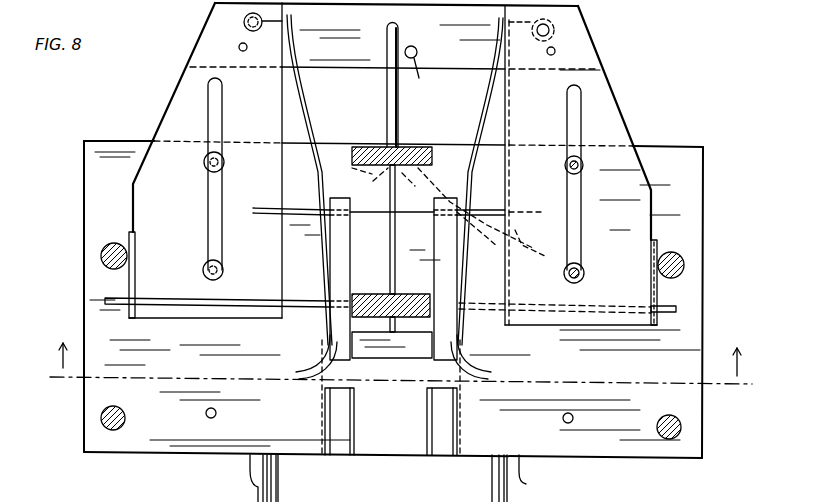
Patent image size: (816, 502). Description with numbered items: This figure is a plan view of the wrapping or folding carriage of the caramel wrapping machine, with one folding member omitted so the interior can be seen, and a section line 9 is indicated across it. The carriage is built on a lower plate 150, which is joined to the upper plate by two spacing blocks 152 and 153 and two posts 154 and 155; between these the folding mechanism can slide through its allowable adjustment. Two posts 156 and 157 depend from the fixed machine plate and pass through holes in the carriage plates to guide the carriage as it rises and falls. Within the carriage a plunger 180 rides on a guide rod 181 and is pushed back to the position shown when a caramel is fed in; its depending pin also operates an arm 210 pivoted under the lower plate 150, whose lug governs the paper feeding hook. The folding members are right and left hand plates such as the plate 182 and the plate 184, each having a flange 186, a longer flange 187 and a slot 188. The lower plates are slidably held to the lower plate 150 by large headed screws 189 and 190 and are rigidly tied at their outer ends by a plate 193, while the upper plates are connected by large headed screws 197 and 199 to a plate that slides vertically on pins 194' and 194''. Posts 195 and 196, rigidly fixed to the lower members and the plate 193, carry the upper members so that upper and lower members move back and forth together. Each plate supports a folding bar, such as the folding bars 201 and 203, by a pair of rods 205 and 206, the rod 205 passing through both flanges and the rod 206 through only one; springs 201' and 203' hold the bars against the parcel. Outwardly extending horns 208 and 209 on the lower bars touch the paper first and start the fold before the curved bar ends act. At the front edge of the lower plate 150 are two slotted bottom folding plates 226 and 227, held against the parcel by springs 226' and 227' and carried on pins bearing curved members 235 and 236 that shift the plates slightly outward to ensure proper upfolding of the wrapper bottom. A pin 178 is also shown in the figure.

The section line 9- 9 is at (397, 370).
The lower plate 150 is at (703, 411).
The spacing block 152 is at (416, 146).
The spacing block 153 is at (409, 294).
The post 154 is at (100, 418).
The post 155 is at (682, 428).
The post 156 is at (101, 257).
The post 157 is at (684, 262).
The pin 178 is at (424, 71).
The plunger 180 is at (407, 358).
The guide rod 181 is at (386, 113).
The plate 182 is at (261, 203).
The plate 184 is at (620, 255).
The flange 186 is at (136, 290).
The longer flange 187 is at (258, 256).
The slot 188 is at (222, 202).
The large headed screw 189 is at (224, 162).
The large headed screw 190 is at (224, 272).
The plate 193 is at (512, 23).
The pin 194' is at (186, 417).
The pin 194'' is at (594, 412).
The post 195 is at (555, 50).
The post 196 is at (260, 37).
The large headed screw 197 is at (566, 277).
The large headed screw 199 is at (583, 165).
The folding bar 201 is at (358, 279).
The spring 201' is at (326, 180).
The folding bar 203 is at (431, 279).
The spring 203' is at (471, 181).
The rod 205 is at (118, 306).
The rod 206 is at (267, 215).
The horn 208 is at (304, 368).
The horn 209 is at (486, 371).
The arm 210 is at (545, 266).
The bottom folding plate 226 is at (338, 434).
The spring 226' is at (296, 397).
The bottom folding plate 227 is at (445, 434).
The spring 227' is at (493, 395).
The curved member 235 is at (250, 470).
The curved member 236 is at (526, 484).